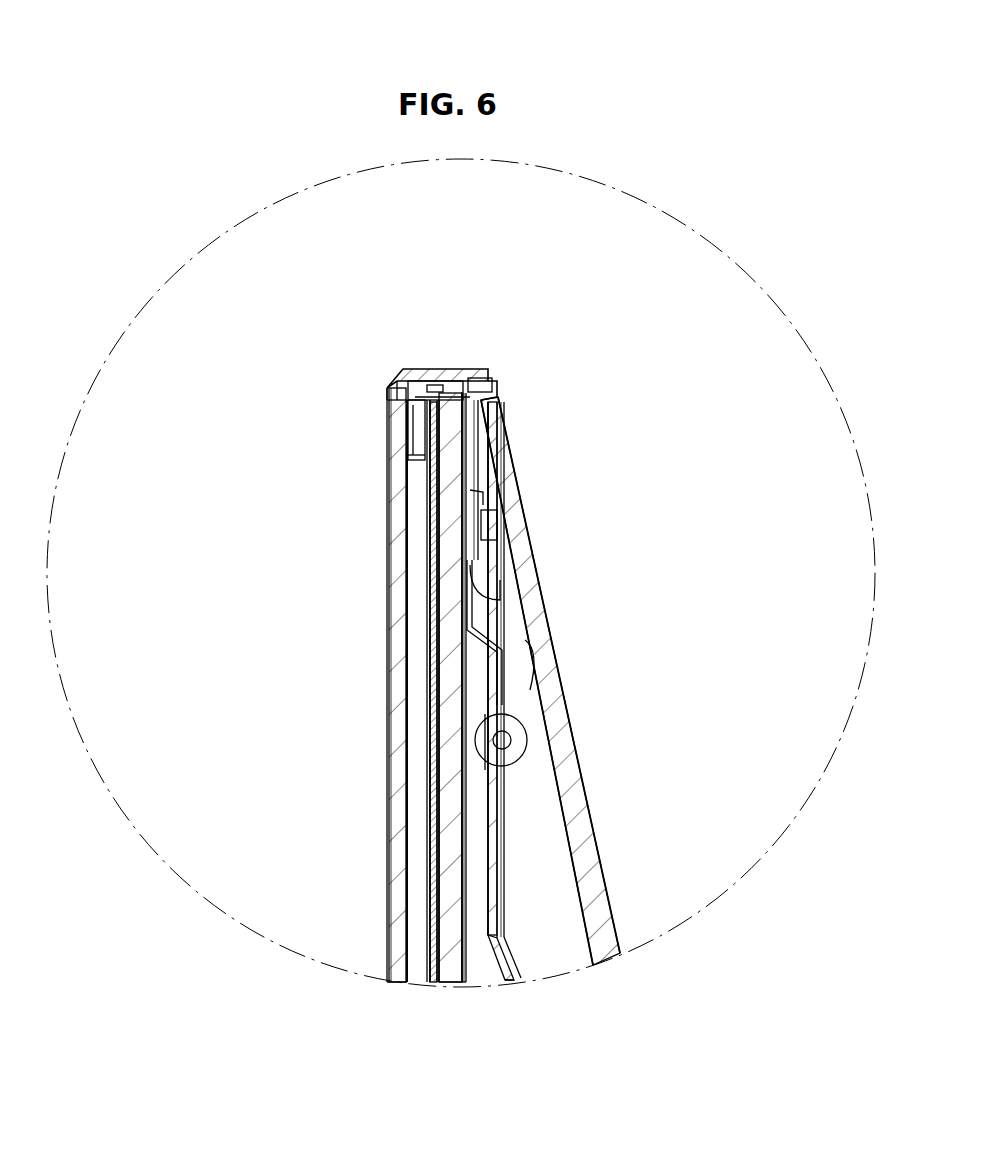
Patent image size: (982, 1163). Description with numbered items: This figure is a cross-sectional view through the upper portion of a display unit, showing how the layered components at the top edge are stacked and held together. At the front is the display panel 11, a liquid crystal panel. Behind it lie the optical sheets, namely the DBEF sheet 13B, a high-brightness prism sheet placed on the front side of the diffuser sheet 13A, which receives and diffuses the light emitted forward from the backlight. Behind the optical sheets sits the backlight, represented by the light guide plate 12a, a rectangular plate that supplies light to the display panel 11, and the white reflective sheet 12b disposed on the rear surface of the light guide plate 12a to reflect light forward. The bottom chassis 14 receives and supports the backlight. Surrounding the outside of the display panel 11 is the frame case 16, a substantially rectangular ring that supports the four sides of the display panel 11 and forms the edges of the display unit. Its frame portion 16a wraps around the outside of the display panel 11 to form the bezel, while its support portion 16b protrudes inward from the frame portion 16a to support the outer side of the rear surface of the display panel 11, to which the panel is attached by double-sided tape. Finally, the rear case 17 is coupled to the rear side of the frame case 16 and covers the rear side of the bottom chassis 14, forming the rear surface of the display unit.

The display panel 11 is at (368, 598).
The light guide plate 12a is at (460, 462).
The white reflective sheet 12b is at (463, 492).
The diffuser sheet 13A is at (435, 978).
The DBEF sheet 13B is at (425, 978).
The bottom chassis 14 is at (493, 857).
The frame case 16 is at (409, 381).
The frame portion 16a is at (402, 371).
The support portion 16b is at (418, 452).
The rear case 17 is at (550, 627).